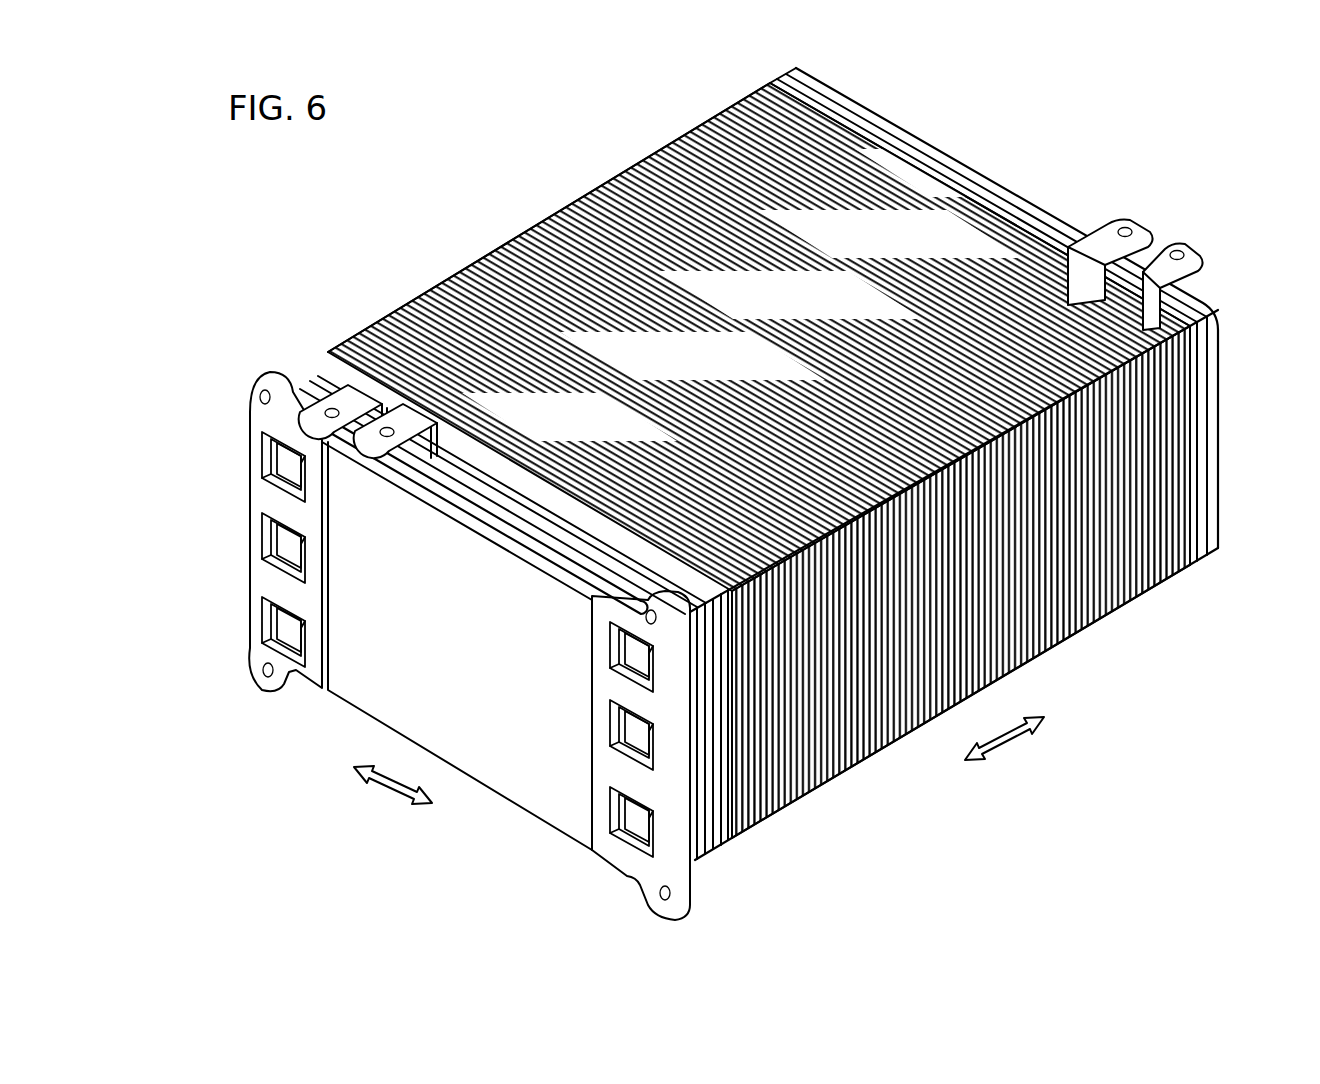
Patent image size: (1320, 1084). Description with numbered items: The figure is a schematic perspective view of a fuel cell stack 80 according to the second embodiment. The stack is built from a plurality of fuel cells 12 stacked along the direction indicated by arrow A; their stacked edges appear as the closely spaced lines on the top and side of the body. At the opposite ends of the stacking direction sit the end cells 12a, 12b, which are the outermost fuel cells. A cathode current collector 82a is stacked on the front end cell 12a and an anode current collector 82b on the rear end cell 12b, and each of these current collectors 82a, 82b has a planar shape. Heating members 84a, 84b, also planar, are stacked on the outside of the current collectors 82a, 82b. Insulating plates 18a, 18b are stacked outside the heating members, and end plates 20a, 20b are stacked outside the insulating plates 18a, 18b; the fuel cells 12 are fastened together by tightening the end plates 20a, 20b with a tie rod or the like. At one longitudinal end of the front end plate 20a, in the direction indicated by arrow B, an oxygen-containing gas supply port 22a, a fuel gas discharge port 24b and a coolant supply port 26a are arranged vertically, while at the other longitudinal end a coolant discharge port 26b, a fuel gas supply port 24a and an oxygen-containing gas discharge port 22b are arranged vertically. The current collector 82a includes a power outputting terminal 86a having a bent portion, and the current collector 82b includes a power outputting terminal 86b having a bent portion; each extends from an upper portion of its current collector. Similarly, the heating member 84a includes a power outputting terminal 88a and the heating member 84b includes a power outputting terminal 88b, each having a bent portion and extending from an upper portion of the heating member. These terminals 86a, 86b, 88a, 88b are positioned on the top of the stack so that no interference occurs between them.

The fuel cell stack 80 is at (222, 210).
The fuel cells 12 is at (487, 248).
The end cell 12a is at (583, 540).
The end cell 12b is at (1150, 385).
The insulating plate 18a is at (503, 522).
The insulating plate 18b is at (905, 165).
The end plate 20a is at (488, 755).
The end plate 20b is at (968, 153).
The oxygen-containing gas supply port 22a is at (265, 462).
The oxygen-containing gas discharge port 22b is at (640, 815).
The fuel gas supply port 24a is at (633, 728).
The fuel gas discharge port 24b is at (265, 545).
The coolant supply port 26a is at (268, 628).
The coolant discharge port 26b is at (635, 644).
The cathode current collector 82a is at (396, 451).
The anode current collector 82b is at (1129, 220).
The heating member 84a is at (311, 390).
The heating member 84b is at (1194, 249).
The power outputting terminal 86a is at (397, 425).
The power outputting terminal 86b is at (1100, 230).
The power outputting terminal 88a is at (345, 392).
The power outputting terminal 88b is at (1175, 246).